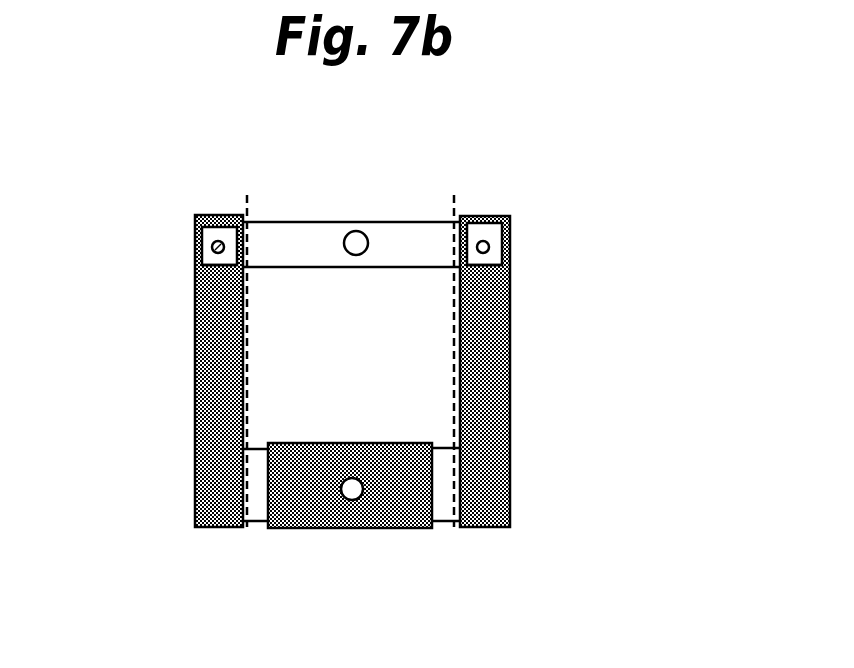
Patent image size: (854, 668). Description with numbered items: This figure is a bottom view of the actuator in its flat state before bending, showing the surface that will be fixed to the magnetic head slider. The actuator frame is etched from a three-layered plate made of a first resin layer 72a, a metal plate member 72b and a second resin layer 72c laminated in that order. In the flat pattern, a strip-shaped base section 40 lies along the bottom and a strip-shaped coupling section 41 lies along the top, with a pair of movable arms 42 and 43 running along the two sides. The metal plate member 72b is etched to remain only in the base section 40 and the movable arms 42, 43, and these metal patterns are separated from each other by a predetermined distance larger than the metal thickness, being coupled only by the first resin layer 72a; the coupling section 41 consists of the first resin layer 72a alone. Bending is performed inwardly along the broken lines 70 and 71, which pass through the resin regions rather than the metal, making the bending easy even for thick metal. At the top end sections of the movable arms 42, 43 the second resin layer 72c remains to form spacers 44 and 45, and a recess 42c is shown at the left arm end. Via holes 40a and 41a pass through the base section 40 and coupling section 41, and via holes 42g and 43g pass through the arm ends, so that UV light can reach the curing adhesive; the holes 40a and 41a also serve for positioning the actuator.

The base section 40 is at (393, 528).
The via hole 40a is at (358, 480).
The coupling section 41 is at (310, 232).
The via hole 41a is at (356, 235).
The movable arm 42 is at (215, 378).
The left recess 42c is at (205, 232).
The via hole 42g is at (214, 248).
The movable arm 43 is at (490, 385).
The via hole 43g is at (490, 246).
The spacer 44 is at (207, 260).
The spacer 45 is at (497, 255).
The broken line 70 is at (247, 532).
The broken line 71 is at (455, 532).
The first resin layer 72a is at (410, 242).
The metal plate member 72b is at (198, 295).
The second resin layer 72c is at (483, 232).